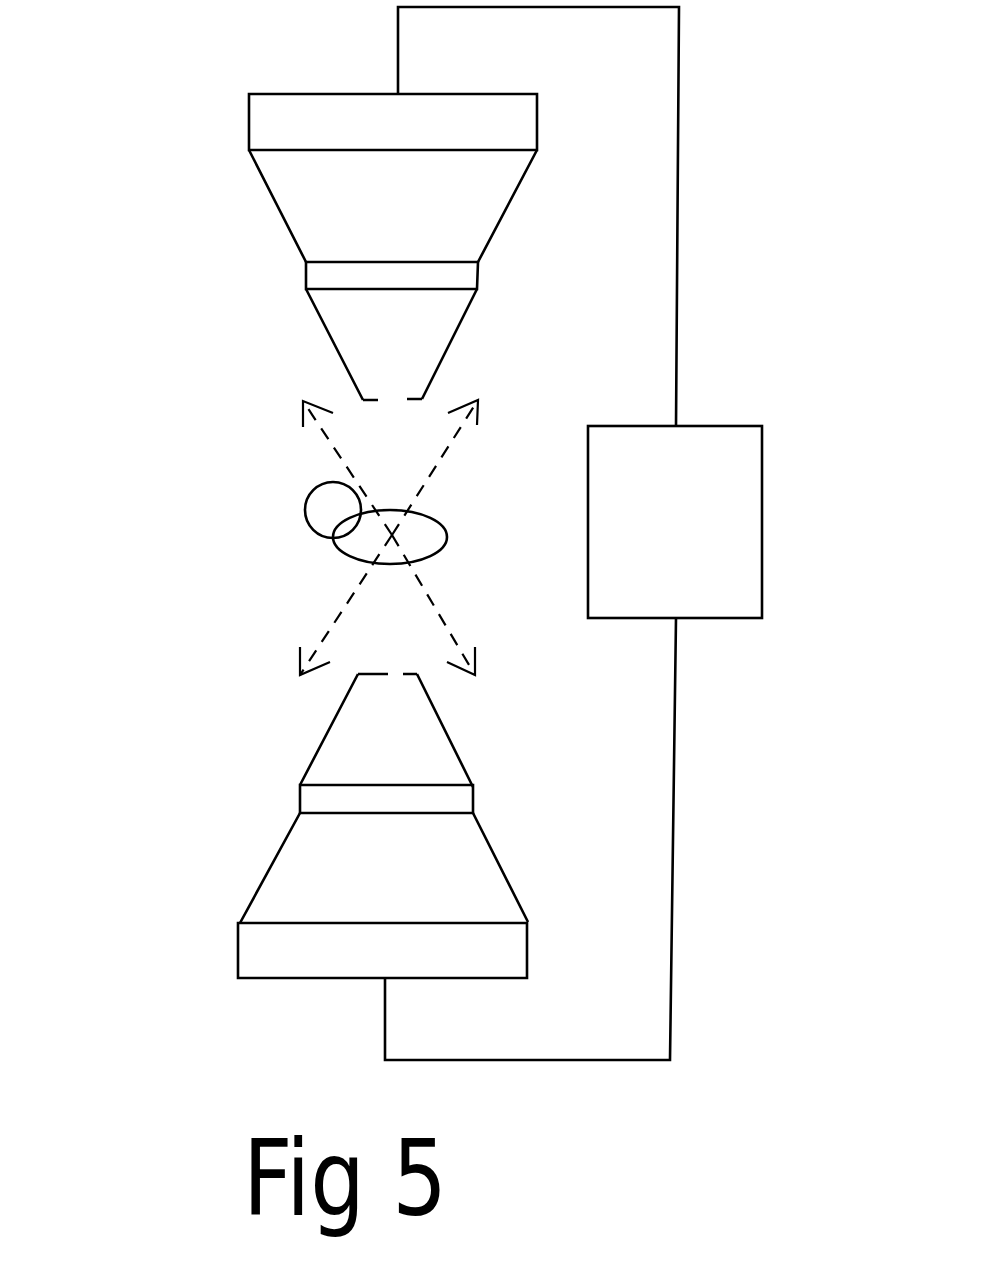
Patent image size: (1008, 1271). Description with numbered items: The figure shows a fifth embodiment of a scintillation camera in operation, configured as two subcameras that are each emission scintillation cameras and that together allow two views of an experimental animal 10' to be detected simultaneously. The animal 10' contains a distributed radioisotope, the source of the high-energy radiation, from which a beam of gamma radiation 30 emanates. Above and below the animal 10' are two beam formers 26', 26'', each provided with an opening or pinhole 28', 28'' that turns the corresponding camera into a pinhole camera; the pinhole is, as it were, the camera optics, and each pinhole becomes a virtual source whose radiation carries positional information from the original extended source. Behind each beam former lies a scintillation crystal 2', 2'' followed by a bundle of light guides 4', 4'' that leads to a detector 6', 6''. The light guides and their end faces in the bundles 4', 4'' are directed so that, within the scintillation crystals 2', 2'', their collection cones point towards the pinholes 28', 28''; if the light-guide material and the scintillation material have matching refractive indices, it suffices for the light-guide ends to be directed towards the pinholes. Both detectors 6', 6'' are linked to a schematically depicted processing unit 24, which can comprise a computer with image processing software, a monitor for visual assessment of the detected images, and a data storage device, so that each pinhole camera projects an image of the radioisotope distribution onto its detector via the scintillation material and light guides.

The processing unit 24 is at (732, 418).
The detector 6' is at (323, 80).
The bundle of light guides 4' is at (308, 206).
The scintillation crystal 2' is at (291, 262).
The beam former 26' is at (277, 344).
The opening (pinhole) 28' is at (255, 380).
The opening (pinhole) 28'' is at (257, 689).
The beam former 26'' is at (277, 730).
The scintillation crystal 2'' is at (285, 785).
The bundle of light guides 4'' is at (298, 867).
The detector 6'' is at (310, 935).
The experimental animal 10' is at (261, 510).
The beam of gamma radiation 30 is at (360, 607).